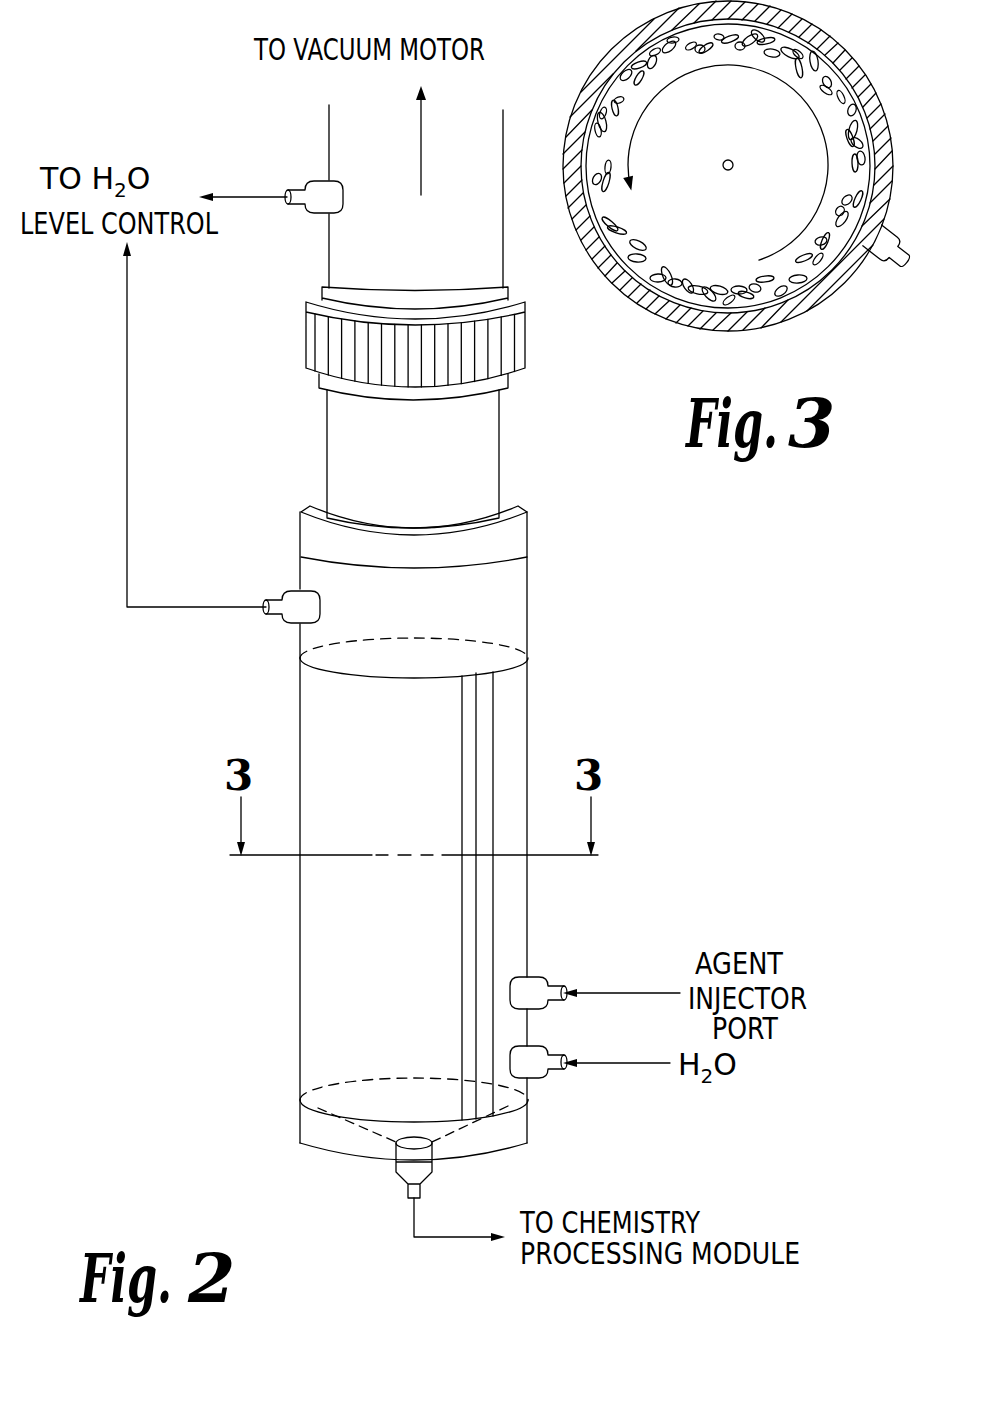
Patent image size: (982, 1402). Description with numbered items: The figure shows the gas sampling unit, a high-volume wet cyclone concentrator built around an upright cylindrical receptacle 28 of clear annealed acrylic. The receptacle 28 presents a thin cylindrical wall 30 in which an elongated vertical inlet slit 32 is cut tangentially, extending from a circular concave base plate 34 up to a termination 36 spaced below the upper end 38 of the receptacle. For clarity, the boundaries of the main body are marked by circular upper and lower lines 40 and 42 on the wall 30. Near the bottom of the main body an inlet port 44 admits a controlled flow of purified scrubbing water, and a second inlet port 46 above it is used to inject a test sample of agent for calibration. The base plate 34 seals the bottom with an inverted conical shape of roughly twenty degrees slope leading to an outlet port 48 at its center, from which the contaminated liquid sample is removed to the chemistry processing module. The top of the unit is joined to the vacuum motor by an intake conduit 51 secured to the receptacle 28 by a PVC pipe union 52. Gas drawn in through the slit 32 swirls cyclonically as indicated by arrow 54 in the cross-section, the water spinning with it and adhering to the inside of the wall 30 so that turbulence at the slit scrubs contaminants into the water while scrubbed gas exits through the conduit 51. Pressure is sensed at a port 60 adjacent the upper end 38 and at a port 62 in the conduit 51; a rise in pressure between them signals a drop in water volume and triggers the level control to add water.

In FIG. 2, the upright cylindrical receptacle 28 is at (283, 566).
In FIG. 2, the cylindrical wall 30 is at (313, 900).
In FIG. 3, the cylindrical wall 30 is at (810, 27).
In FIG. 2, the inlet slit 32 is at (482, 728).
In FIG. 3, the inlet slit 32 is at (802, 313).
In FIG. 2, the base plate 34 is at (300, 1126).
In FIG. 2, the termination 36 is at (488, 674).
In FIG. 2, the upper end 38 is at (312, 504).
In FIG. 2, the upper line 40 is at (328, 672).
In FIG. 2, the lower line 42 is at (365, 1076).
In FIG. 2, the inlet port 44 is at (540, 1078).
In FIG. 2, the second inlet port 46 is at (540, 1009).
In FIG. 3, the second inlet port 46 is at (906, 268).
In FIG. 2, the outlet port 48 is at (405, 1186).
In FIG. 3, the outlet port 48 is at (733, 172).
In FIG. 2, the intake conduit 51 is at (329, 247).
In FIG. 2, the PVC pipe union 52 is at (307, 333).
In FIG. 3, the arrow 54 is at (667, 88).
In FIG. 2, the port 60 is at (279, 625).
In FIG. 2, the port 62 is at (304, 184).